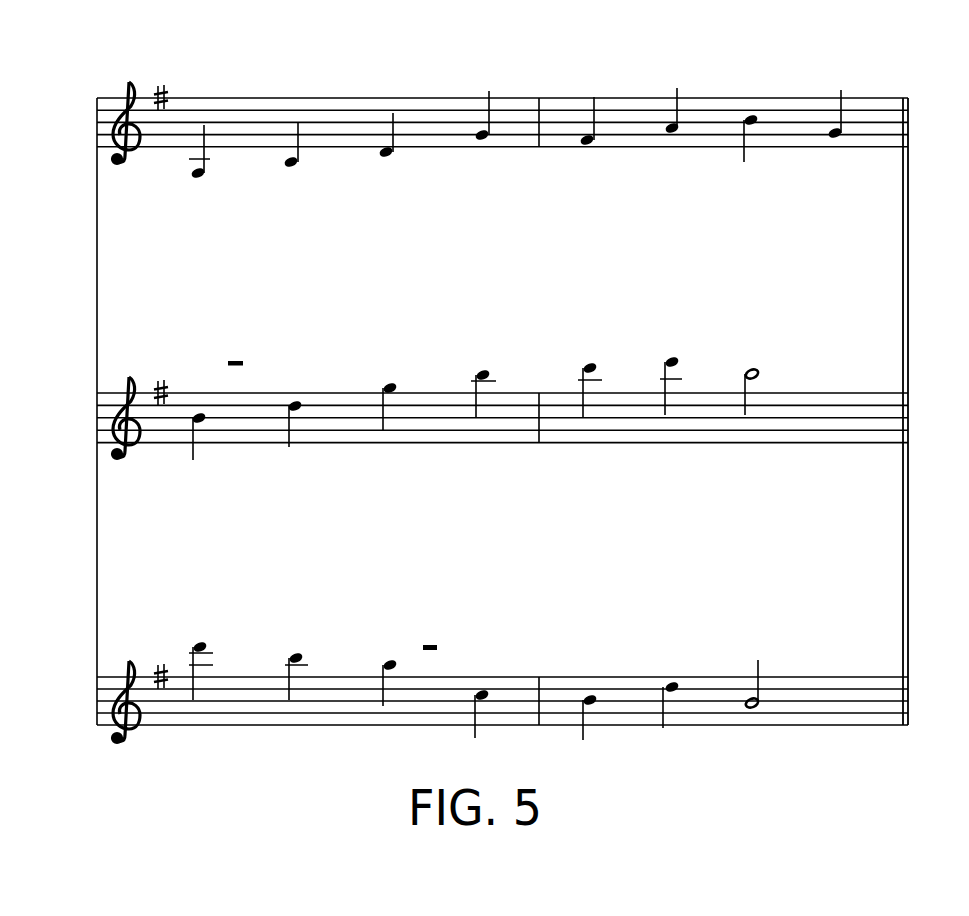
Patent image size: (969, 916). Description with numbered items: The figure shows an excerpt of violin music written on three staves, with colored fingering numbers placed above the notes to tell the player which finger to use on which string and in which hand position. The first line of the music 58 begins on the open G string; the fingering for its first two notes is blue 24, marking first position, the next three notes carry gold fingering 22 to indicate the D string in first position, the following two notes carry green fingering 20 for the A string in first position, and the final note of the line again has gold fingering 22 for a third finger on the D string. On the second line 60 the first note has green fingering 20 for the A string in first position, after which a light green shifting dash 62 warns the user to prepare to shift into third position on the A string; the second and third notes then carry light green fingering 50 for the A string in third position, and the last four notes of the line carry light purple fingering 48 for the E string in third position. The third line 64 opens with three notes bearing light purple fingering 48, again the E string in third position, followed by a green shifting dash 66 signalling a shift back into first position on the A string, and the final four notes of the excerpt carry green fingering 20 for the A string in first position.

The green fingering 20 is at (674, 64).
The gold fingering 22 is at (392, 64).
The blue fingering 24 is at (205, 64).
The light purple fingering 48 is at (482, 340).
The light green fingering 50 is at (294, 352).
The first line of the music 58 is at (97, 122).
The second line 60 is at (97, 418).
The light green shifting dash 62 is at (237, 360).
The third line 64 is at (97, 697).
The green shifting dash 66 is at (430, 645).